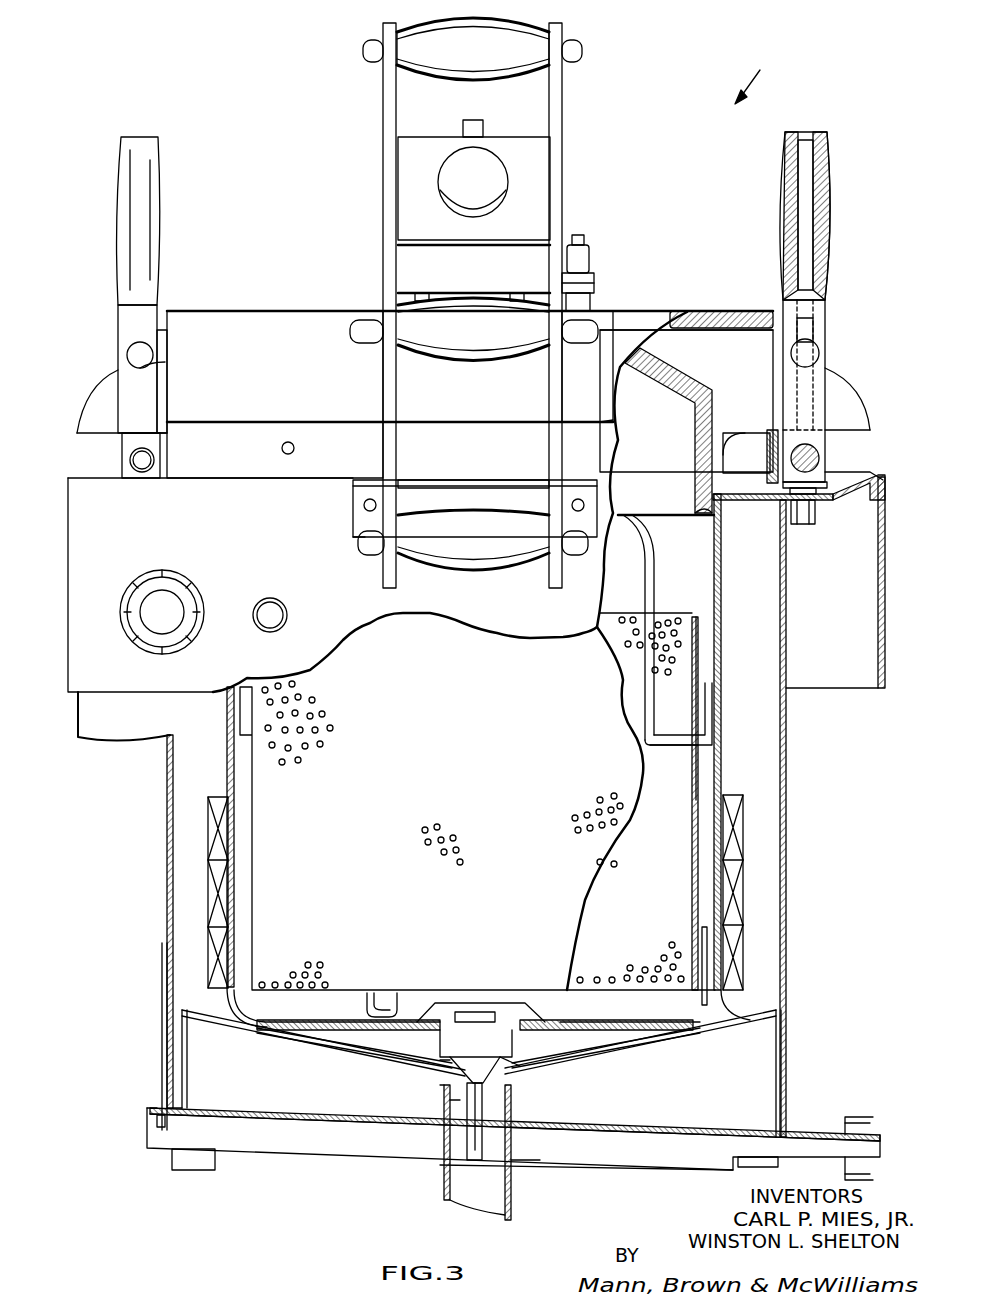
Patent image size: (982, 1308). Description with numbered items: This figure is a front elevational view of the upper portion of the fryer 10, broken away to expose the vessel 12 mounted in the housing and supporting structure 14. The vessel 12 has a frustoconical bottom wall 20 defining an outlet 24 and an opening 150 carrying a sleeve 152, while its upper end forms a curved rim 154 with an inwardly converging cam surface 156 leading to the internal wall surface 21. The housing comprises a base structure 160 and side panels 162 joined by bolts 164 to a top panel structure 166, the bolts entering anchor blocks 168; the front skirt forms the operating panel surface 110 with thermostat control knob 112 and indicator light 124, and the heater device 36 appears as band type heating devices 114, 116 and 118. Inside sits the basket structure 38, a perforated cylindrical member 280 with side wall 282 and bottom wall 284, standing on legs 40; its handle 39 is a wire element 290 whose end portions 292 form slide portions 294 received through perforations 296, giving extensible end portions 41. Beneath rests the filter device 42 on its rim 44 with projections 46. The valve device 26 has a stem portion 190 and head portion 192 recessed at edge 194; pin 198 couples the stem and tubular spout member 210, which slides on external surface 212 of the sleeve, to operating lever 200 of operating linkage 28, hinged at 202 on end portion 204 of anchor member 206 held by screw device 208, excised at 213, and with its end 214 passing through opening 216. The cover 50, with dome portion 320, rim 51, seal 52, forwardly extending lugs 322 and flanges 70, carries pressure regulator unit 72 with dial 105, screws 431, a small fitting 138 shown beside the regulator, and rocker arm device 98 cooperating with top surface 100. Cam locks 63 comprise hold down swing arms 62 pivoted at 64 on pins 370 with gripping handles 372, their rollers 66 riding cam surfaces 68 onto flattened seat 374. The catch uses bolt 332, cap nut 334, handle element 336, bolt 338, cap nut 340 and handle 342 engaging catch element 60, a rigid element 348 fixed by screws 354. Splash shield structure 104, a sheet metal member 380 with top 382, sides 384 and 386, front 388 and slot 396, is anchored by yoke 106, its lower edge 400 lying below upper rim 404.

The fryer 10 is at (746, 74).
The vessel 12 is at (215, 780).
The housing and supporting structure 14 is at (166, 836).
The bottom wall 20 is at (355, 1055).
The internal wall surface 21 is at (722, 557).
The outlet 24 is at (435, 1020).
The valve device 26 is at (440, 1155).
The operating linkage 28 is at (630, 1172).
The heater device 36 is at (198, 956).
The basket structure 38 is at (268, 752).
The handle 39 is at (632, 552).
The legs 40 is at (385, 985).
The end portions 41 is at (715, 716).
The filter device 42 is at (306, 1040).
The rim 44 is at (262, 1038).
The legs or projections 46 is at (415, 1050).
The cover 50 is at (656, 336).
The rim 51 is at (700, 505).
The seal 52 is at (712, 517).
The catch element 60 is at (368, 526).
The hold down swing arms 62 is at (116, 332).
The cam locks 63 is at (105, 277).
The pivotal connection 64 is at (828, 448).
The rollers 66 is at (127, 356).
The cam surfaces 68 is at (88, 395).
The flanges 70 is at (92, 432).
The pressure regulator unit 72 is at (358, 126).
The swing or rocker arm device 98 is at (582, 47).
The top surface 100 is at (383, 310).
The splash shield structure 104 is at (622, 312).
The dial 105 is at (495, 178).
The yoke 106 is at (196, 460).
The operating panel surface 110 is at (360, 635).
The thermostat control knob 112 is at (120, 626).
The band type heating device 114 is at (745, 820).
The band type heating device 116 is at (745, 898).
The band type heating device 118 is at (745, 960).
The indicator light 124 is at (262, 630).
The switch 138 is at (590, 255).
The opening 150 is at (510, 1070).
The sleeve 152 is at (440, 1115).
The curved rim 154 is at (748, 502).
The cam surface 156 is at (695, 470).
The base structure 160 is at (782, 1020).
The side panels 162 is at (787, 633).
The bolts 164 is at (810, 525).
The top panel structure 166 is at (845, 482).
The anchor blocks 168 is at (815, 492).
The stem portion 190 is at (448, 1185).
The head portion 192 is at (475, 1010).
The edge 194 is at (480, 1060).
The pin 198 is at (482, 1152).
The operating lever 200 is at (665, 1140).
The hinge 202 is at (148, 1098).
The end portion 204 is at (158, 1148).
The anchor member 206 is at (160, 1060).
The screw device 208 is at (152, 1123).
The tubular spout member 210 is at (511, 1200).
The external surface 212 is at (440, 1120).
The excised portion 213 is at (520, 1130).
The end 214 is at (880, 1135).
The opening 216 is at (845, 1160).
The cylindrical member 280 is at (700, 612).
The side wall 282 is at (700, 645).
The bottom wall 284 is at (615, 985).
The wire element 290 is at (643, 567).
The end portions 292 is at (645, 770).
The slide portions 294 is at (678, 748).
The perforations 296 is at (700, 738).
The cover portion 320 is at (700, 342).
The forwardly extending lugs 322 is at (383, 390).
The bolt 332 is at (350, 332).
The cap nut 334 is at (598, 332).
The handle element 336 is at (398, 310).
The bolt 338 is at (370, 556).
The cap nut 340 is at (575, 556).
The handle 342 is at (448, 562).
The rigid element 348 is at (353, 500).
The screws 354 is at (353, 517).
The pins 370 is at (815, 455).
The gripping handle 372 is at (158, 175).
The flattened seat 374 is at (150, 362).
The sheet metal member 380 is at (230, 312).
The top 382 is at (692, 310).
The side 384 is at (170, 312).
The side 386 is at (813, 340).
The front 388 is at (262, 328).
The slot 396 is at (772, 435).
The lower edge 400 is at (778, 475).
The upper rim 404 is at (892, 475).
The screws 431 is at (422, 293).